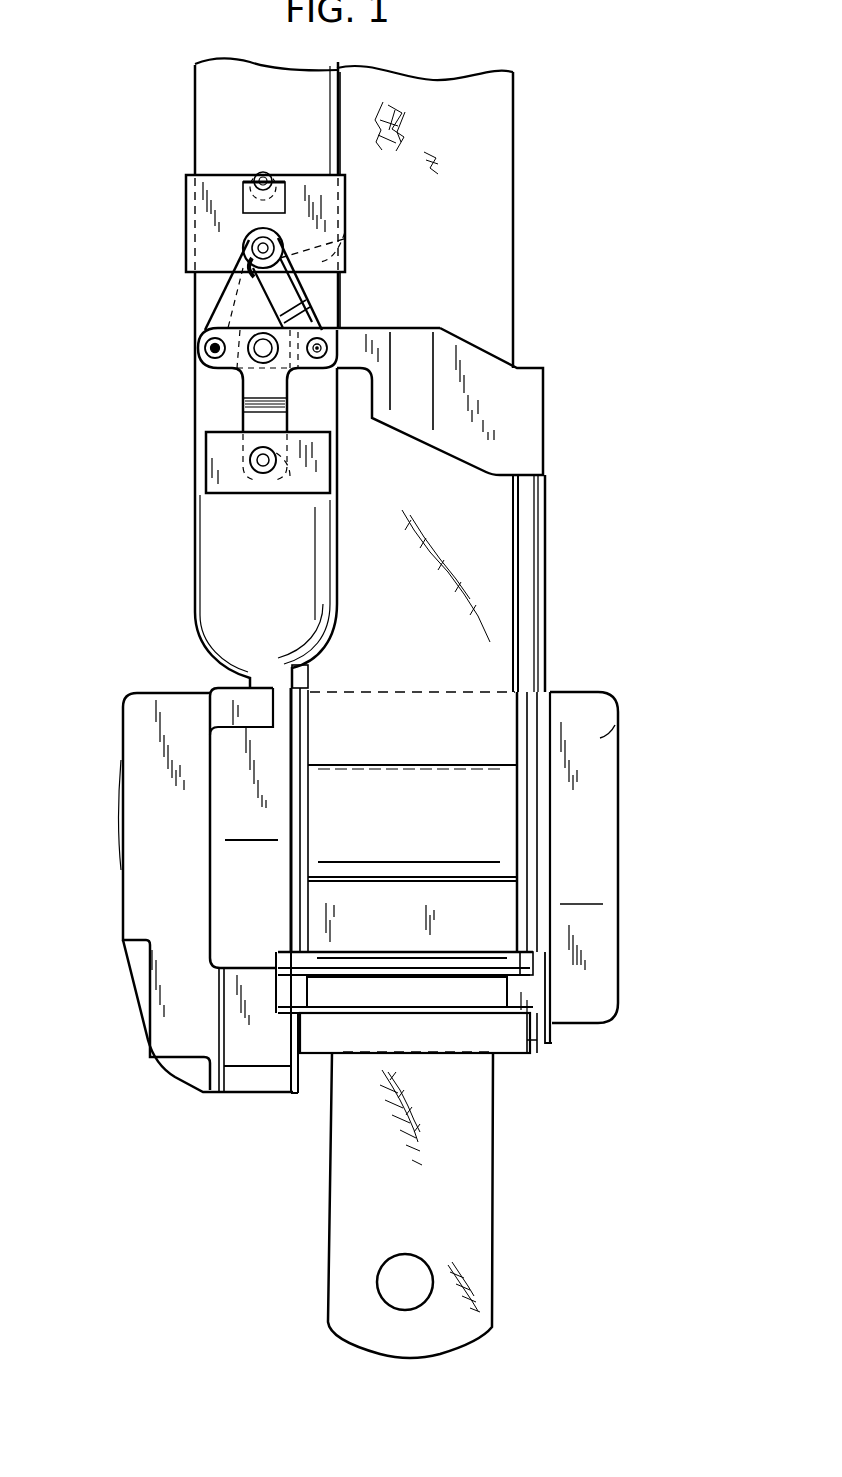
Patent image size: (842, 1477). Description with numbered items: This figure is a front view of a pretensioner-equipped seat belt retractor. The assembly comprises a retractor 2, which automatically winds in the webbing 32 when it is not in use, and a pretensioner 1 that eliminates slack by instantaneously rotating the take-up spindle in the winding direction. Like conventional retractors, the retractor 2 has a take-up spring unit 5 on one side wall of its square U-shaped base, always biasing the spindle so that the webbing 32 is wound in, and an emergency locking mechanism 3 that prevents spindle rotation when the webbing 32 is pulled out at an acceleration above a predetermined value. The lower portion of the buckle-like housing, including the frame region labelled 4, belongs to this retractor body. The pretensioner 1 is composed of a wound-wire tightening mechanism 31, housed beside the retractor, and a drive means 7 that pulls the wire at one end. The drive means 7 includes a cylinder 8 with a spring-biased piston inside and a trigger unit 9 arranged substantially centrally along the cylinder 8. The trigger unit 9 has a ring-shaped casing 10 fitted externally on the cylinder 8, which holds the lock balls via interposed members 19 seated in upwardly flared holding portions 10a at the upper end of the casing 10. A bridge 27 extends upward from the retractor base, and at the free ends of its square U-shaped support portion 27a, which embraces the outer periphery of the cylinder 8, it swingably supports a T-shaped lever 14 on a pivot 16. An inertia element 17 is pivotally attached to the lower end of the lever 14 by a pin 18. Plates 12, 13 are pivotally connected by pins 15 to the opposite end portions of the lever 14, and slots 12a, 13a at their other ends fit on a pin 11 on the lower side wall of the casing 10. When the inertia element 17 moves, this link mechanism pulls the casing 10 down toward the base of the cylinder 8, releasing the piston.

The pretensioner 1 is at (182, 676).
The retractor 2 is at (538, 1055).
The emergency locking mechanism 3 is at (605, 740).
The buckle frame 4 is at (516, 905).
The take-up spring unit 5 is at (140, 735).
The drive means 7 is at (168, 472).
The cylinder 8 is at (197, 535).
The trigger unit 9 is at (180, 265).
The casing 10 is at (203, 183).
The holding portion 10a is at (284, 190).
The pin 11 is at (248, 240).
The plate 12 is at (222, 312).
The slot 12a is at (232, 278).
The plate 13 is at (335, 284).
The slot 13a is at (338, 245).
The T-shaped lever 14 is at (262, 384).
The pin 15 is at (206, 348).
The pivot 16 is at (276, 362).
The inertia element 17 is at (215, 452).
The pin 18 is at (262, 474).
The interposed member 19 is at (256, 176).
The bridge 27 is at (518, 390).
The support portion 27a is at (355, 362).
The wound-wire tightening mechanism 31 is at (237, 878).
The webbing 32 is at (494, 212).